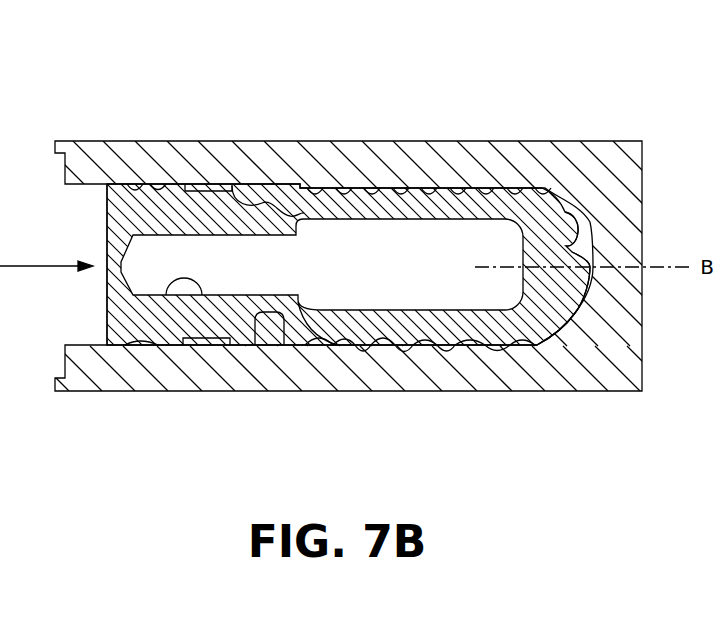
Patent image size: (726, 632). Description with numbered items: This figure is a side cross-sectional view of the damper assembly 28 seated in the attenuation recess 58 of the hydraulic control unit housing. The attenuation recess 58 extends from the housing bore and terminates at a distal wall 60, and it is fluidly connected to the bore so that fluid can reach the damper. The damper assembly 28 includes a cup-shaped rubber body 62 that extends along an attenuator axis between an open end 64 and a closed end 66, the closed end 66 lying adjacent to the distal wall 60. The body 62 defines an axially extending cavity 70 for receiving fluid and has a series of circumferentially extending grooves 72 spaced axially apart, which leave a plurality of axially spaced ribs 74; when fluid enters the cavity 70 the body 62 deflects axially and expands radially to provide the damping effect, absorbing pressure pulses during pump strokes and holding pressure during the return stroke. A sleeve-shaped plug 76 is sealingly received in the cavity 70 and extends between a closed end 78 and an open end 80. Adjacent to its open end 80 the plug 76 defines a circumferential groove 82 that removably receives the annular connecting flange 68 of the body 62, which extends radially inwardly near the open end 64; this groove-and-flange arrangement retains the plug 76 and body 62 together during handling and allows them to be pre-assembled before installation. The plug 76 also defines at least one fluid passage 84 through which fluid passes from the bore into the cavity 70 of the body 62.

The plug 76 is at (117, 182).
The damper assembly 28 is at (290, 176).
The open end 64 is at (214, 186).
The annular connecting flange 68 is at (266, 203).
The circumferential groove 82 is at (255, 200).
The attenuation recess 58 is at (373, 190).
The axially spaced ribs 74 is at (419, 190).
The axially extending cavity 70 is at (483, 190).
The body 62 is at (550, 186).
The distal wall 60 is at (574, 222).
The closed end 66 is at (581, 295).
The closed end 78 is at (107, 303).
The circumferentially extending grooves 72 is at (398, 338).
The fluid passage 84 is at (203, 297).
The open end 80 is at (334, 327).